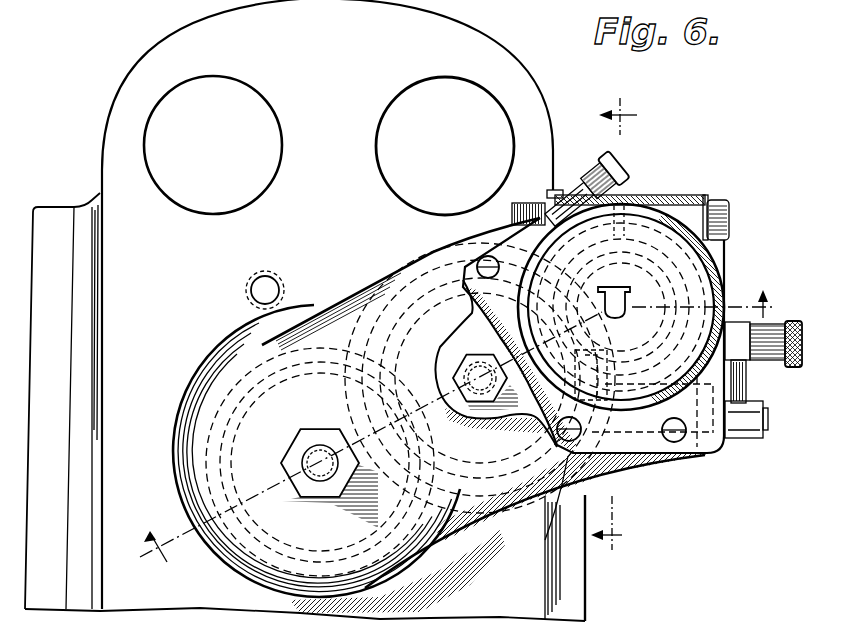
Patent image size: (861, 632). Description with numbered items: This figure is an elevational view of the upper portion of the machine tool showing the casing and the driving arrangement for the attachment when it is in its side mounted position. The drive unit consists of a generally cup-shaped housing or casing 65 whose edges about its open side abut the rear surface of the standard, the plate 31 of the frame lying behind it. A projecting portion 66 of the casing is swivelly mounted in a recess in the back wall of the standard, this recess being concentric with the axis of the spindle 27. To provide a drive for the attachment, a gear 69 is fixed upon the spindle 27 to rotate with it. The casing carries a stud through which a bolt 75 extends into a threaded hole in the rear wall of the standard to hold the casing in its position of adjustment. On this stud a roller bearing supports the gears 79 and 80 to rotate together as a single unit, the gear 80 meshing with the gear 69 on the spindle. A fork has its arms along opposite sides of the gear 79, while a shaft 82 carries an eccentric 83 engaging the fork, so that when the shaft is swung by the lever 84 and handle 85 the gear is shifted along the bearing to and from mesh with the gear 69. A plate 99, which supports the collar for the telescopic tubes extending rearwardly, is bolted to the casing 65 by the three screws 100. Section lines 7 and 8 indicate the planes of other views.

The frame plate 31 is at (118, 213).
The spindle 27 is at (433, 544).
The gear 69 is at (222, 452).
The gear 80 is at (402, 397).
The bolt 75 is at (458, 365).
The casing 65 is at (620, 484).
The gear 79 is at (621, 307).
The projecting portion 66 is at (662, 343).
The eccentric 83 is at (644, 398).
The screws 100 is at (478, 262).
The plate 99 is at (648, 444).
The lever 84 is at (745, 383).
The shaft 82 is at (763, 420).
The handle 85 is at (793, 320).
The section line 7- 7 is at (449, 437).
The section line 8- 8 is at (614, 321).